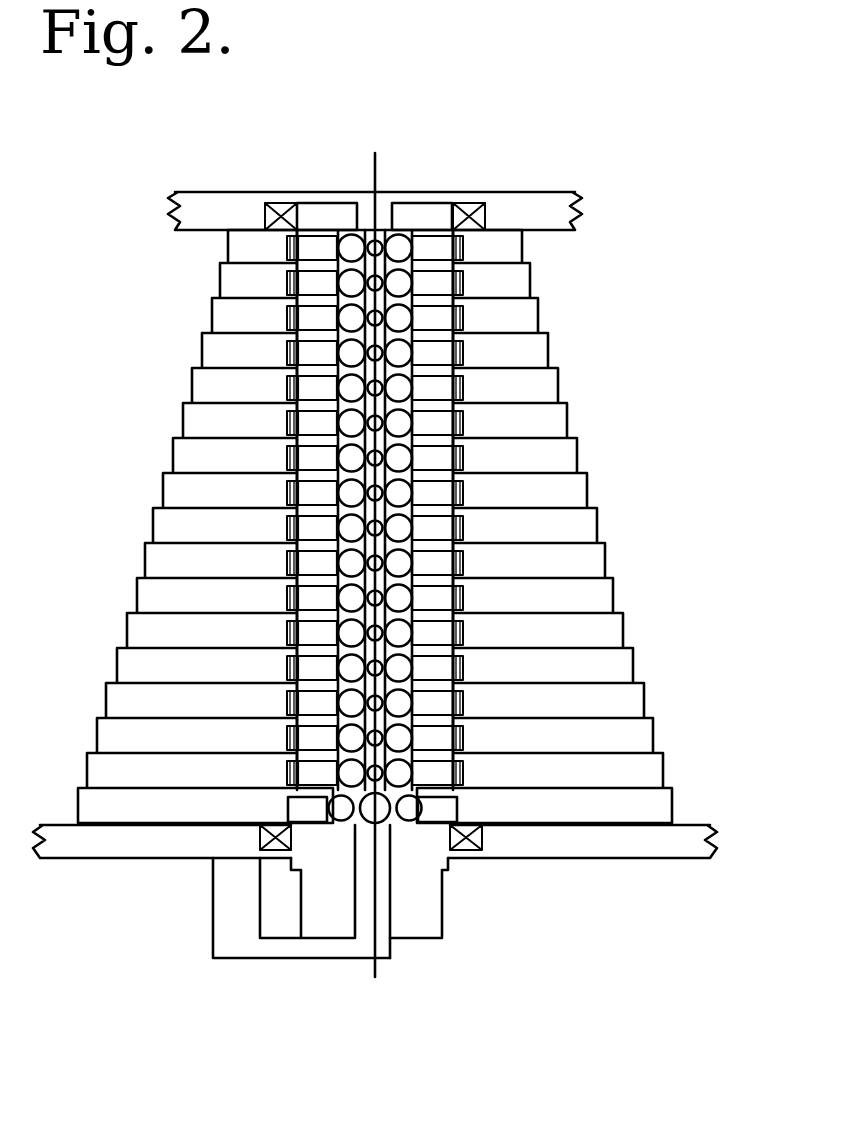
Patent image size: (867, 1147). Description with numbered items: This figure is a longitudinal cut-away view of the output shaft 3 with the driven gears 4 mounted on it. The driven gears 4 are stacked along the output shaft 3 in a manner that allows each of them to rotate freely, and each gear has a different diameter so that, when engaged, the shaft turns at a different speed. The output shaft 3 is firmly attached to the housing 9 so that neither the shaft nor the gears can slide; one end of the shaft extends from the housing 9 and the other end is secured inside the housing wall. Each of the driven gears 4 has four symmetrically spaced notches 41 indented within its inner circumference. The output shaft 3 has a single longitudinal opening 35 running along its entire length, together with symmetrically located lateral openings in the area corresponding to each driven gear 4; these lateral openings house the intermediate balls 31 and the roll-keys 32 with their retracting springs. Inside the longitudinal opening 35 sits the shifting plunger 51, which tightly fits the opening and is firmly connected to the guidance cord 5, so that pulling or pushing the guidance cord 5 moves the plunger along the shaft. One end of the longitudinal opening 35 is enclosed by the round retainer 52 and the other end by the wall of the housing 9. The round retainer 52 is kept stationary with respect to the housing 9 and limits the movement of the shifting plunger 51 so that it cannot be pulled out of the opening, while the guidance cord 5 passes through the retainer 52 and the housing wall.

The output shaft 3 is at (420, 218).
The driven gears 4 is at (513, 527).
The guidance cord 5 is at (378, 166).
The housing 9 is at (507, 208).
The intermediate balls 31 is at (400, 318).
The roll-keys 32 is at (295, 461).
The longitudinal opening 35 is at (413, 399).
The notches 41 is at (290, 355).
The shifting plunger 51 is at (390, 825).
The round retainer 52 is at (232, 900).